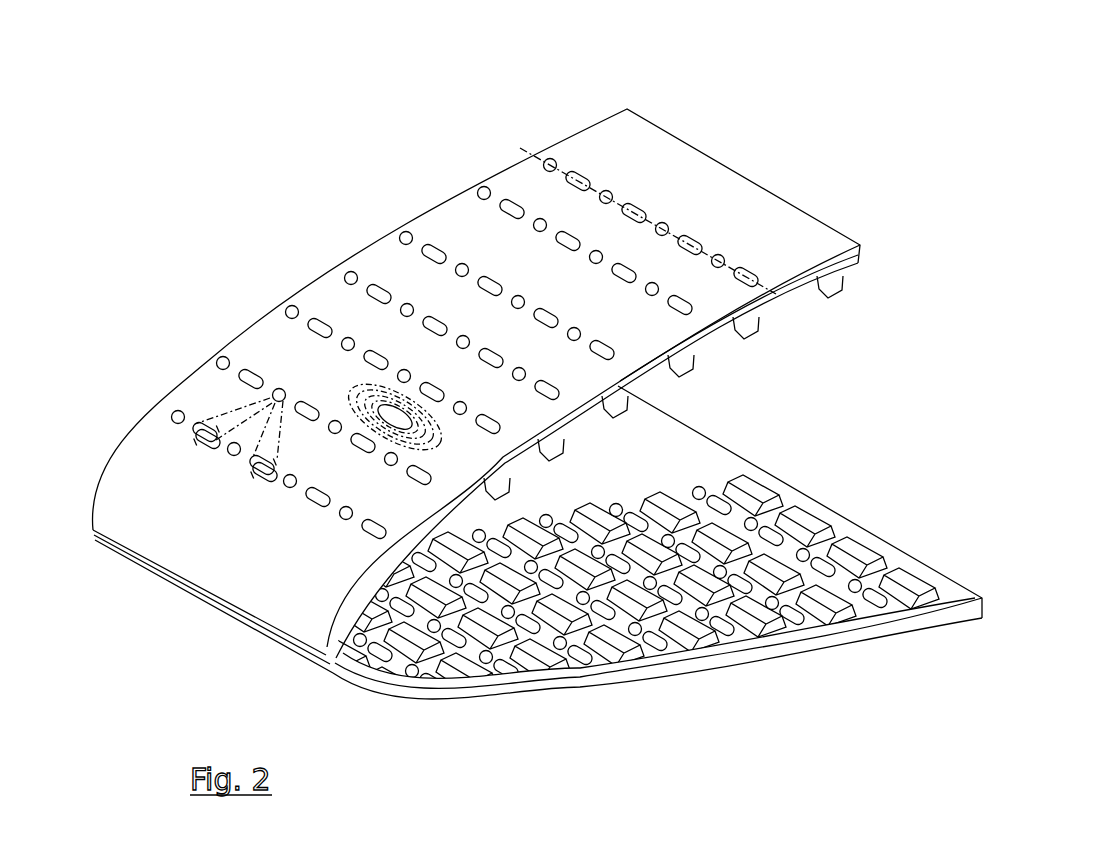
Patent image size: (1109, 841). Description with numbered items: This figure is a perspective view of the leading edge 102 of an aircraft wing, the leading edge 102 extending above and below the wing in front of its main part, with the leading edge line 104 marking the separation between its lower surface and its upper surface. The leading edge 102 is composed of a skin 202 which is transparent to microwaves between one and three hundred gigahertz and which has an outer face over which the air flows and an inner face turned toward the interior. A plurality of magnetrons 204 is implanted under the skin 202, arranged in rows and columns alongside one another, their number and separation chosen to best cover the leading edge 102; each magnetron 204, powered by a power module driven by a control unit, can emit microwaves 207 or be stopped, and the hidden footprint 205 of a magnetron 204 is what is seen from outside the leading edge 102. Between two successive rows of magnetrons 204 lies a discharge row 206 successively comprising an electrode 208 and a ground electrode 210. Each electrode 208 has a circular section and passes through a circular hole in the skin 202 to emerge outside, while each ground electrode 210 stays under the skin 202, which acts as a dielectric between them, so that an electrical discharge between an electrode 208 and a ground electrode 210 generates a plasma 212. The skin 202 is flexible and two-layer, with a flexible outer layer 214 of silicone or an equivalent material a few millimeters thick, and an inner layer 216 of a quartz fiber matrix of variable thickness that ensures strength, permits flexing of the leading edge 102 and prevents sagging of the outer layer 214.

The leading edge 102 is at (757, 105).
The leading edge line 104 is at (183, 595).
The skin 202 is at (852, 215).
The magnetrons 204 is at (868, 555).
The hidden footprint of a magnetron 205 is at (362, 407).
The discharge row 206 is at (520, 148).
The microwaves 207 is at (380, 393).
The electrode 208 is at (481, 186).
The ground electrode 210 is at (210, 370).
The plasma 212 is at (230, 417).
The outer layer 214 is at (862, 246).
The inner layer 216 is at (853, 265).